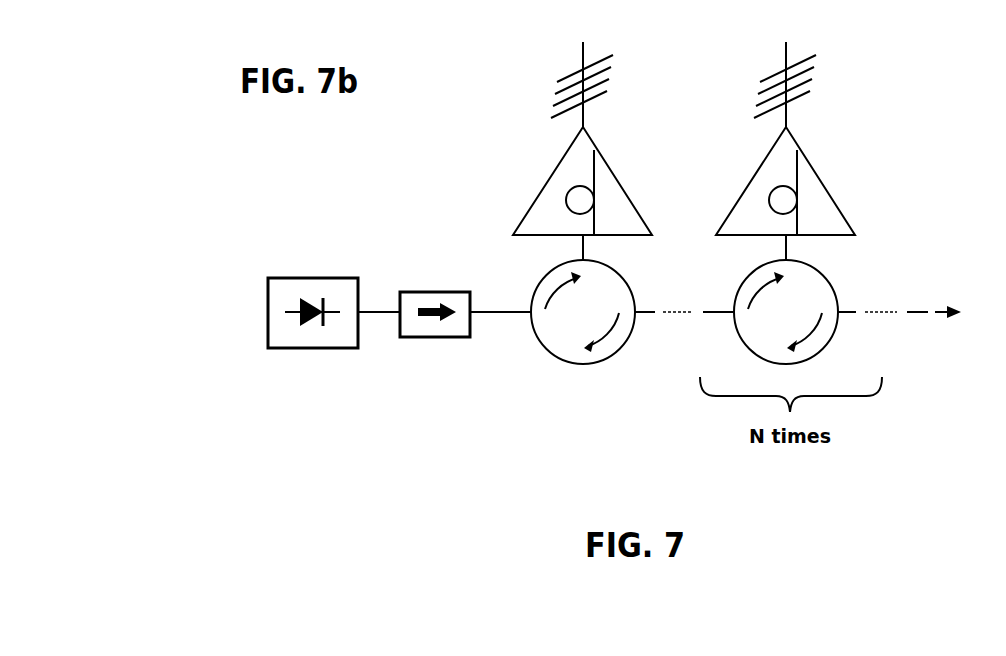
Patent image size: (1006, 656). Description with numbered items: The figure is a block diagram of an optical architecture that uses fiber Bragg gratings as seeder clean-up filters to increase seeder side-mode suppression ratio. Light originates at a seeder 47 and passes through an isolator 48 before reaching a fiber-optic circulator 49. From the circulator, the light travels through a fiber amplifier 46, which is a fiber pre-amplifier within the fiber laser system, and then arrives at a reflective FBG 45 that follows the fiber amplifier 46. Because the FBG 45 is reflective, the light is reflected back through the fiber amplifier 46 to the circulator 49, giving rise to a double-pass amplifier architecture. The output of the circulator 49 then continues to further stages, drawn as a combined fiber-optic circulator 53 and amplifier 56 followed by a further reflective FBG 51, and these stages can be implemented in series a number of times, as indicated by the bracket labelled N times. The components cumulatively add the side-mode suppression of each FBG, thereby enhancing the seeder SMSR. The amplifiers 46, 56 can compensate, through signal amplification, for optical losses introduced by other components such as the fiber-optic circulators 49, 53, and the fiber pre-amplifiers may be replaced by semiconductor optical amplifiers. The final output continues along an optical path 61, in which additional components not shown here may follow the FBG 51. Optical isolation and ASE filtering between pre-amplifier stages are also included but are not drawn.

The reflective FBG 45 is at (553, 88).
The fiber amplifier 46 is at (531, 212).
The seeder 47 is at (296, 278).
The isolator 48 is at (431, 292).
The fiber-optic circulator 49 is at (548, 356).
The reflective FBG 51 is at (756, 86).
The fiber-optic circulator 53 is at (834, 283).
The amplifier 56 is at (832, 197).
The optical path 61 is at (920, 312).